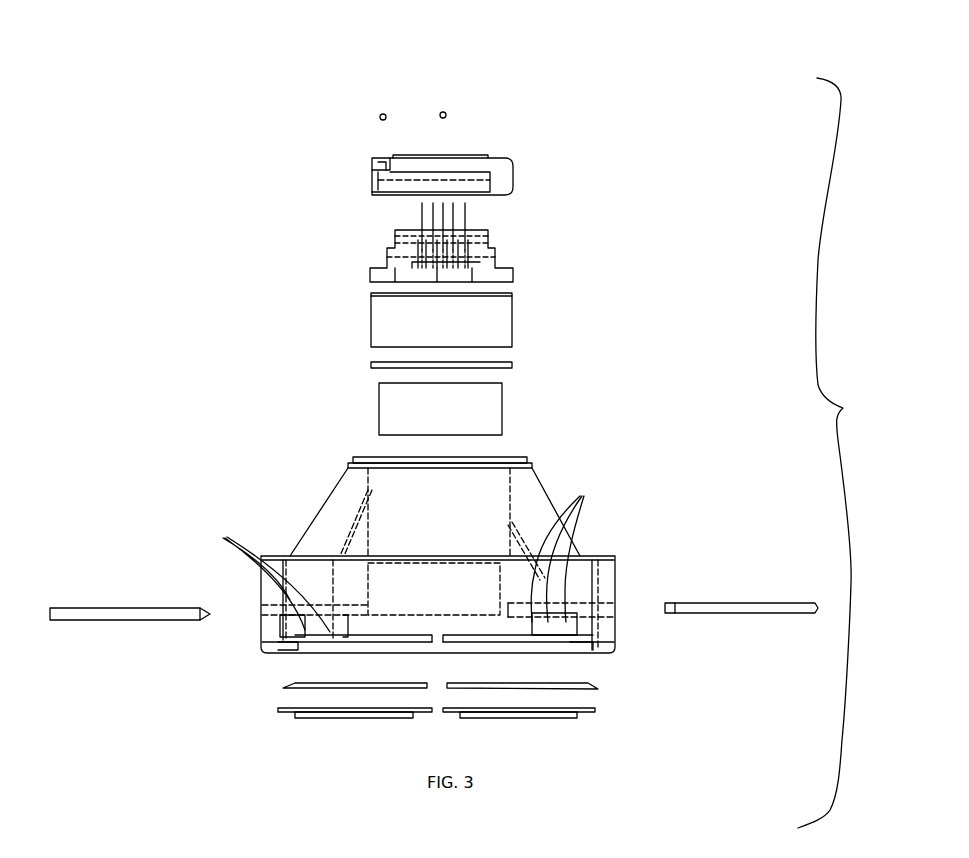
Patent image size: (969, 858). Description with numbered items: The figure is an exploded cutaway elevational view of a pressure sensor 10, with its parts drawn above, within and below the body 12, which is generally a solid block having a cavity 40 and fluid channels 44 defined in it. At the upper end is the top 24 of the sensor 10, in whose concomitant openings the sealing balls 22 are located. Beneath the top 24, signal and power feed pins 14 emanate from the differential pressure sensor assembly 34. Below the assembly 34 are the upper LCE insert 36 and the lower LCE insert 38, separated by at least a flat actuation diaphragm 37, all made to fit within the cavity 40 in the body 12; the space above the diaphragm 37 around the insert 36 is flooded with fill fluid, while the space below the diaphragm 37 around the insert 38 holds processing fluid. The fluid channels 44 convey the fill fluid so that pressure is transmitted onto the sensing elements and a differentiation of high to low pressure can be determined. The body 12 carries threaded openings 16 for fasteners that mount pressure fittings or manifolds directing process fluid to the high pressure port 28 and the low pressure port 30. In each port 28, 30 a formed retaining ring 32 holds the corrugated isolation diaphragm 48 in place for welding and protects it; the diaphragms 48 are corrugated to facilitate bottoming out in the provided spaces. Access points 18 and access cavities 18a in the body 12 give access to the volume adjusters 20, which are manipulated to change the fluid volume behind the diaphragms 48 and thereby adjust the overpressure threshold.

The pressure sensor 10 is at (844, 453).
The body 12 is at (605, 566).
The signal and power feed pins 14 is at (468, 210).
The threaded openings for fasteners 16 is at (305, 572).
The access points 18 is at (262, 613).
The access cavities 18a is at (268, 610).
The volume adjusters 20 is at (97, 612).
The sealing balls 22 is at (383, 108).
The top 24 is at (505, 167).
The high pressure port 28 is at (295, 647).
The low pressure port 30 is at (583, 643).
The retaining ring 32 is at (450, 709).
The differential pressure sensor assembly 34 is at (493, 250).
The upper LCE insert 36 is at (507, 304).
The flat actuation diaphragm 37 is at (515, 363).
The lower LCE insert 38 is at (488, 408).
The cavity 40 is at (372, 458).
The fluid channels 44 is at (397, 555).
The corrugated isolation diaphragms 48 is at (283, 689).